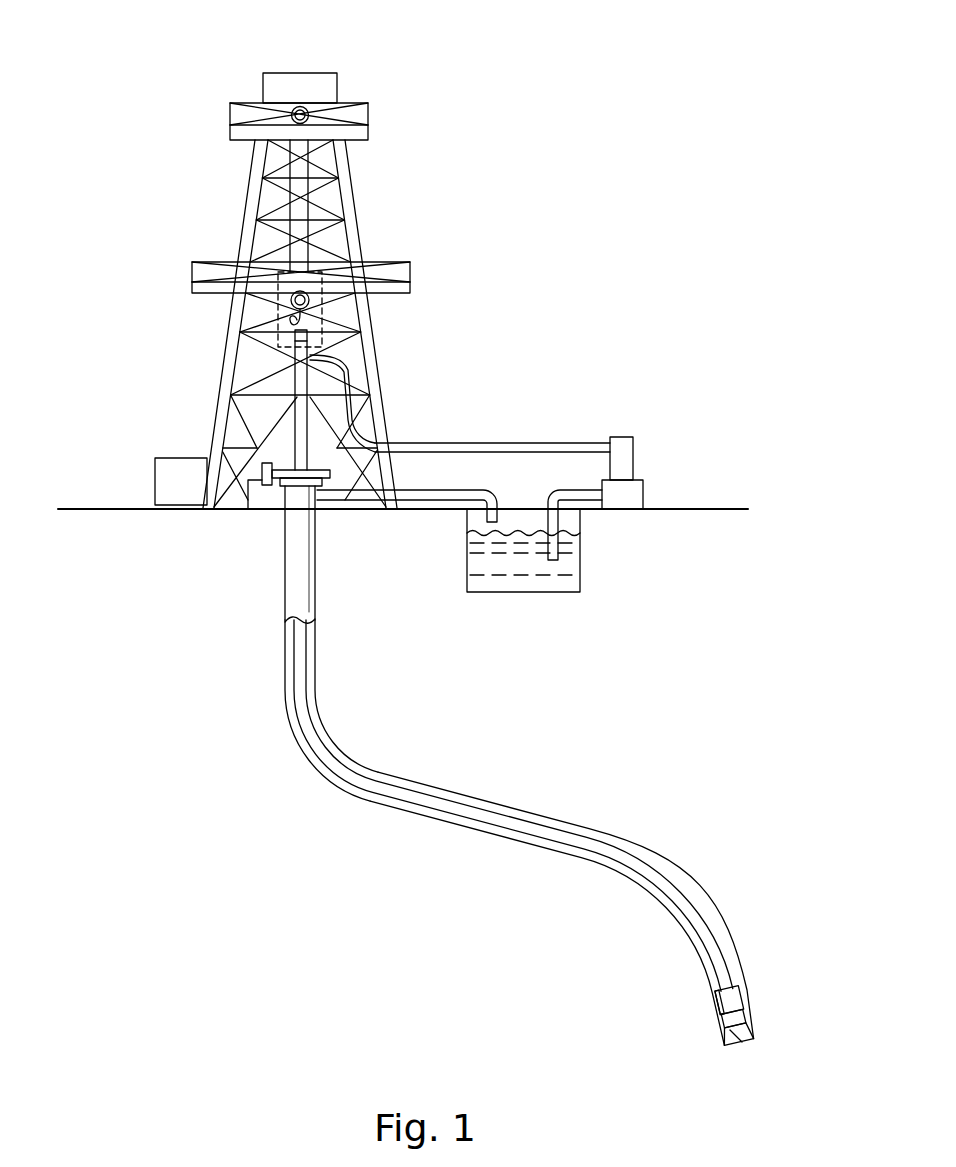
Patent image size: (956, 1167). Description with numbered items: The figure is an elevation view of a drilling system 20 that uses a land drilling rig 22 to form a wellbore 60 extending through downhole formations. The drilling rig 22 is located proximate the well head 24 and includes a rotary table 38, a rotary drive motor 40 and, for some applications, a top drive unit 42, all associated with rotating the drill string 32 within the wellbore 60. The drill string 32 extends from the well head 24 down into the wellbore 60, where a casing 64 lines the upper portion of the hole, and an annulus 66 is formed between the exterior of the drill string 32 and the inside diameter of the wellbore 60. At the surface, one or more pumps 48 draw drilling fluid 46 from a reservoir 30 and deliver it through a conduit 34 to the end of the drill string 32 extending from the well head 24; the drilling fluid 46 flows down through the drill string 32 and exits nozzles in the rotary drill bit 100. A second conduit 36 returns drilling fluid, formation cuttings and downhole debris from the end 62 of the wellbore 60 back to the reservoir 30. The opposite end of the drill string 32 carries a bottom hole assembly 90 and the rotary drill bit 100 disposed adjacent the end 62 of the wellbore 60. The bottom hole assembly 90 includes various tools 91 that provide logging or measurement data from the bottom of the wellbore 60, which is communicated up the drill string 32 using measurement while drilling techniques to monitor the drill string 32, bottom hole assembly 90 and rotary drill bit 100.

The drilling system 20 is at (188, 52).
The land drilling rig 22 is at (242, 215).
The top drive unit 42 is at (276, 312).
The rotary drive motor 40 is at (155, 482).
The well head 24 is at (272, 490).
The rotary table 38 is at (330, 471).
The conduit 34 is at (570, 443).
The pump 48 is at (633, 462).
The conduit 36 is at (492, 493).
The drilling fluid 46 is at (553, 582).
The reservoir 30 is at (492, 592).
The casing 64 is at (284, 610).
The annulus 66 is at (288, 668).
The drill string 32 is at (320, 760).
The wellbore 60 is at (386, 769).
The bottom hole assembly 90 is at (747, 998).
The tools 91 is at (713, 995).
The rotary drill bit 100 is at (748, 1032).
The end of wellbore 62 is at (728, 1038).